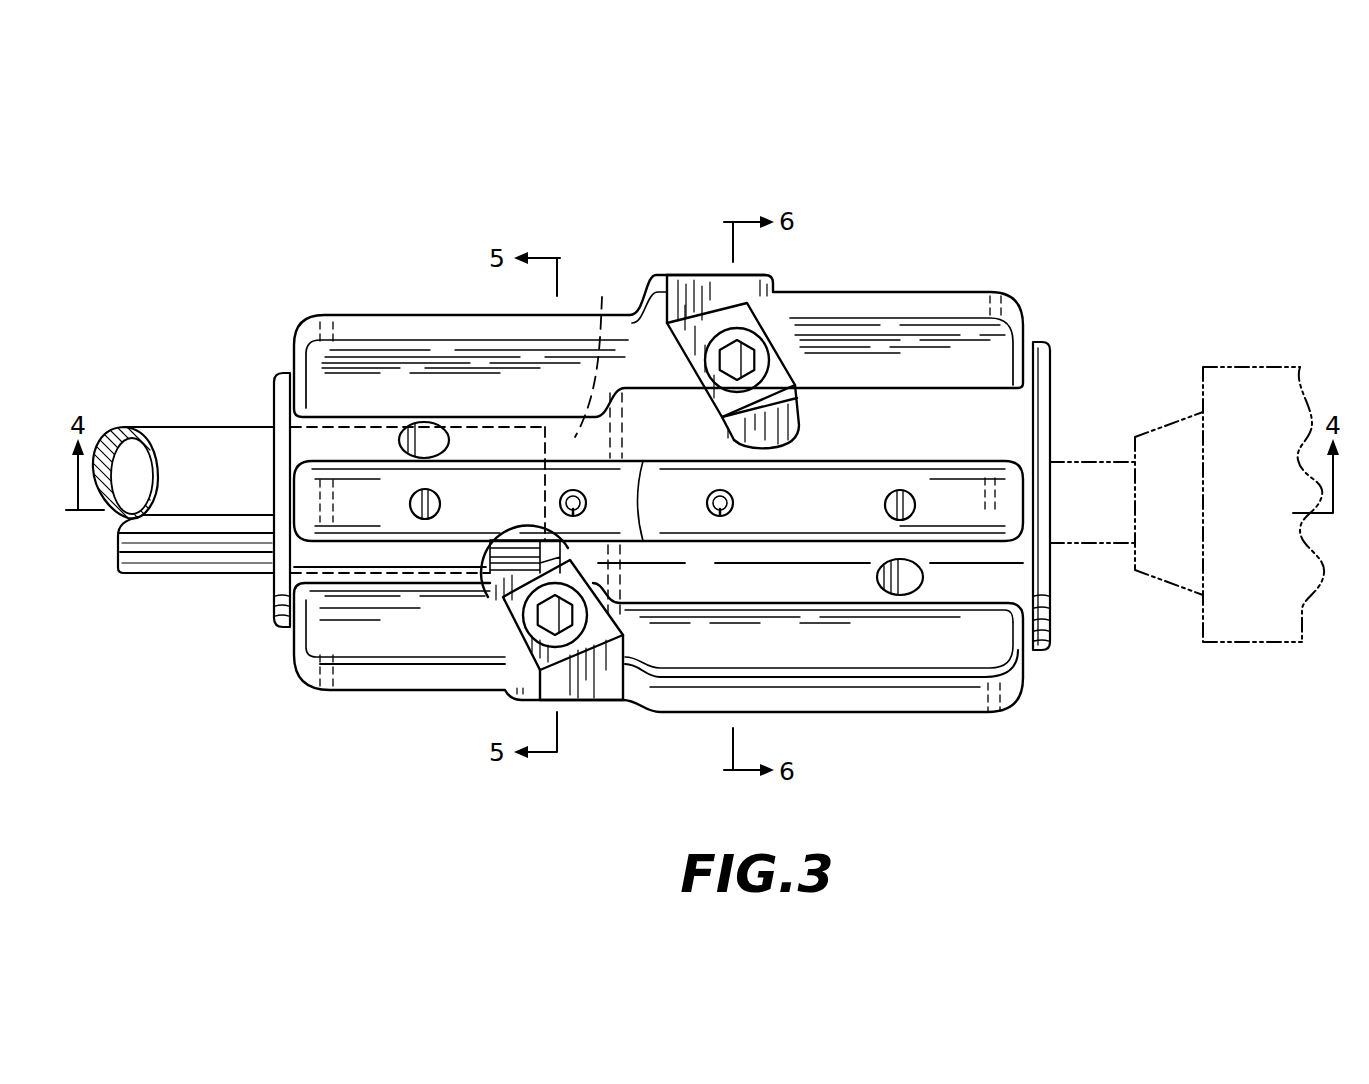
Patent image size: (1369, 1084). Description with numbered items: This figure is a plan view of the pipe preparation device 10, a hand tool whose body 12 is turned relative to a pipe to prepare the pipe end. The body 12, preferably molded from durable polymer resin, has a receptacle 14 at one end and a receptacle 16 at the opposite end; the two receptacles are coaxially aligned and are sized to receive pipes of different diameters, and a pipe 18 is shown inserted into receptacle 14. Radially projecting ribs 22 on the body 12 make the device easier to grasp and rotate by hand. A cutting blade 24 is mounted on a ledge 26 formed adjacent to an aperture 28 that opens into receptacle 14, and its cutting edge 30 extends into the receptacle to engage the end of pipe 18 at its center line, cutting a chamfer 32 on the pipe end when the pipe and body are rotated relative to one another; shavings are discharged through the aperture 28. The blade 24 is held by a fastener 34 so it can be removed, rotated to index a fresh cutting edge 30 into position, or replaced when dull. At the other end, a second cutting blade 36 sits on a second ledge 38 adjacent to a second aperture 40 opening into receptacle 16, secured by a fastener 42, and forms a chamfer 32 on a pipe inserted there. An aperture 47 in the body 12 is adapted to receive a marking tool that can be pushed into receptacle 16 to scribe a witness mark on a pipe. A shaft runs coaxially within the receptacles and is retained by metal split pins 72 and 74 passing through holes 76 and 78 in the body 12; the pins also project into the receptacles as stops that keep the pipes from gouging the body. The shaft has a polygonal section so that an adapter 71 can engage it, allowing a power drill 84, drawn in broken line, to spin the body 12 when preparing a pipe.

The pipe preparation device 10 is at (1028, 203).
The body 12 is at (854, 603).
The receptacle 14 is at (273, 575).
The receptacle 16 is at (1052, 602).
The pipe 18 is at (203, 443).
The radially projecting ribs 22 is at (945, 698).
The cutting blade 24 is at (513, 612).
The ledge 26 is at (607, 688).
The aperture 28 is at (490, 580).
The cutting edge 30 is at (523, 568).
The chamfer 32 is at (596, 351).
The fastener 34 is at (543, 628).
The second cutting blade 36 is at (743, 310).
The second ledge 38 is at (680, 282).
The second aperture 40 is at (774, 418).
The fastener 42 is at (741, 350).
The aperture 47 is at (420, 422).
The adapter 71 is at (1108, 462).
The split pin 72 is at (581, 491).
The split pin 74 is at (733, 494).
The hole 76 is at (578, 516).
The hole 78 is at (725, 516).
The power drill 84 is at (1228, 366).